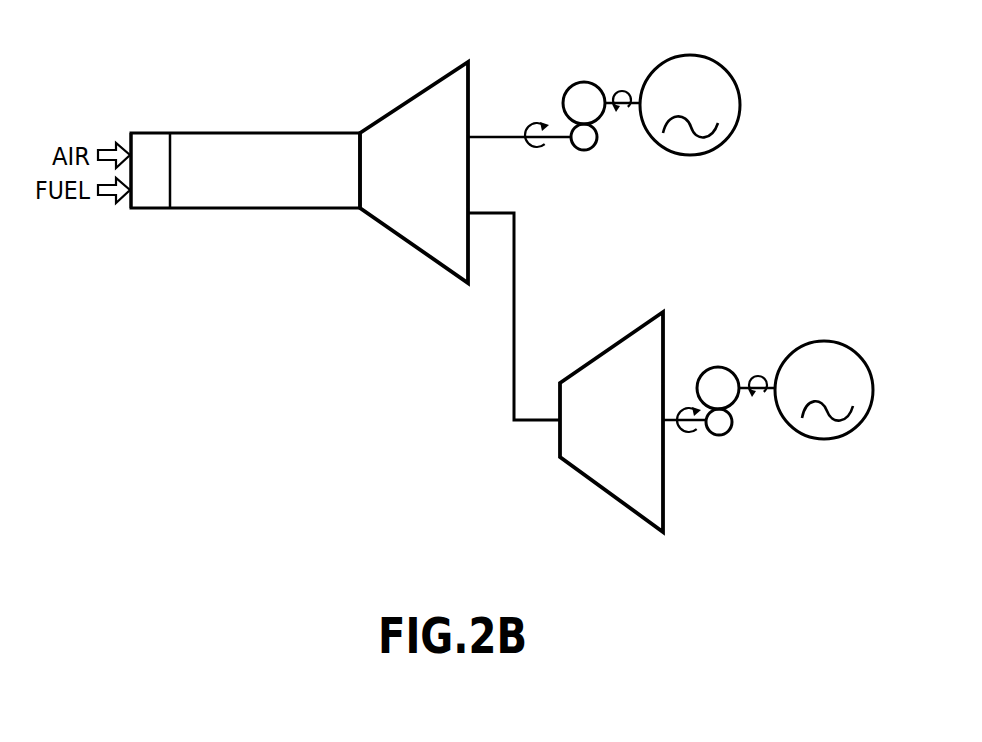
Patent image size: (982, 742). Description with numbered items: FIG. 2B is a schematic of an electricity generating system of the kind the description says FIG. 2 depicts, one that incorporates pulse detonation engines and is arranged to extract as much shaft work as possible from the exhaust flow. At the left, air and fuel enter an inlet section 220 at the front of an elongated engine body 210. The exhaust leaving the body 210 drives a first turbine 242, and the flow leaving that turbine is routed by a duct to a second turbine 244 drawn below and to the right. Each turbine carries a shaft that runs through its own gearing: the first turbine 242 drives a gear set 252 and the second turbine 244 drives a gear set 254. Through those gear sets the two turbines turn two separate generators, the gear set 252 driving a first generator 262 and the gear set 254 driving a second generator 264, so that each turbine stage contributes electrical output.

The combustor 210 is at (322, 210).
The air and fuel inlet section 220 is at (155, 210).
The first turbine 242 is at (398, 108).
The second turbine 244 is at (609, 492).
The first gearbox 252 is at (597, 147).
The second gearbox 254 is at (758, 328).
The first generator 262 is at (695, 155).
The second generator 264 is at (832, 440).